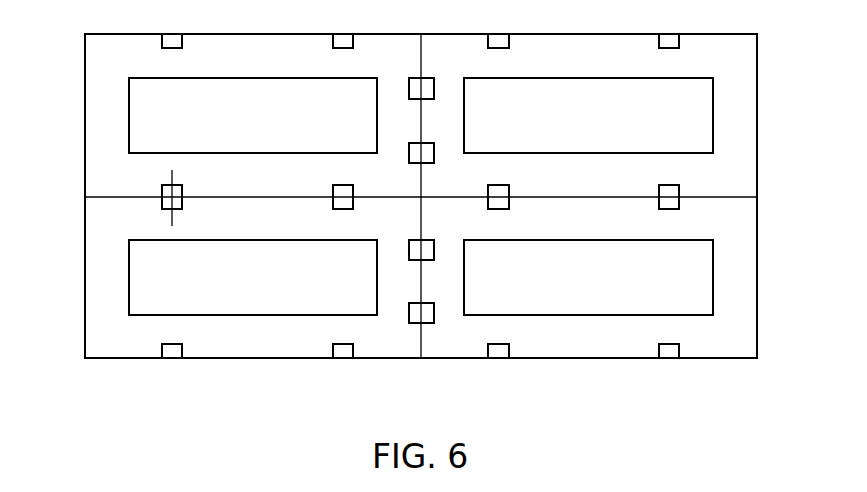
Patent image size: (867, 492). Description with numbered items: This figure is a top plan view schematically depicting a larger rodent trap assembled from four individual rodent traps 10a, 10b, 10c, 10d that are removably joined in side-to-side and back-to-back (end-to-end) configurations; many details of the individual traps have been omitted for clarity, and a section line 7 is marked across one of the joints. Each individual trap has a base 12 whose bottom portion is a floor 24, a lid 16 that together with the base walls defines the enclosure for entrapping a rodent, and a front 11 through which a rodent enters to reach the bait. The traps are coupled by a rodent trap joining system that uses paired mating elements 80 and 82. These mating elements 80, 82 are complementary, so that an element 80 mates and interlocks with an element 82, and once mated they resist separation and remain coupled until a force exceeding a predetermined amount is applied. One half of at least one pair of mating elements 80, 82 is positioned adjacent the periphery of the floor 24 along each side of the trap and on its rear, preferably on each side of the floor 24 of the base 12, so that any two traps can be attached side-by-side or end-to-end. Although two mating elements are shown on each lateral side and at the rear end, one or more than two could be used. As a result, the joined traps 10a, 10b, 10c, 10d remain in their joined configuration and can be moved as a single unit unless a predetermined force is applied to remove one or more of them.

The individual rodent trap 10a is at (72, 174).
The individual rodent trap 10b is at (65, 323).
The individual rodent trap 10c is at (770, 325).
The individual rodent trap 10d is at (766, 178).
The front 11 is at (107, 125).
The base 12 is at (85, 89).
The lid 16 is at (252, 126).
The floor 24 is at (100, 59).
The section line 7- 7 is at (169, 173).
The mating element 80 is at (341, 42).
The mating element 82 is at (669, 42).